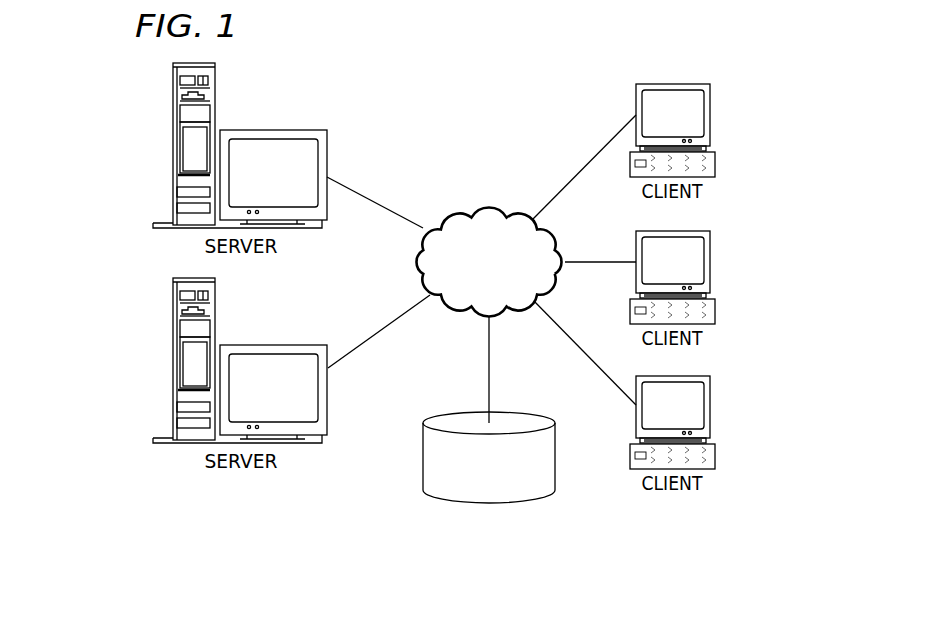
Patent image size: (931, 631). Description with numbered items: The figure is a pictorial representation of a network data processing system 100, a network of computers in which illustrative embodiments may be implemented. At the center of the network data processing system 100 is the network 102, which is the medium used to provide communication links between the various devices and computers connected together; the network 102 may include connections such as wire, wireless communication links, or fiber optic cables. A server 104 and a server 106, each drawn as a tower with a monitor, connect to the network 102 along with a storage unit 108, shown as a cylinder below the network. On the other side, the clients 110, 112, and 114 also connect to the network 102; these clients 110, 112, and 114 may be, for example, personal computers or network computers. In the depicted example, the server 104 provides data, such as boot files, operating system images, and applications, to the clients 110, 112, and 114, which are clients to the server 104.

The network data processing system 100 is at (539, 97).
The network 102 is at (460, 210).
The server 104 is at (173, 147).
The server 106 is at (173, 362).
The storage unit 108 is at (472, 501).
The client 110 is at (710, 115).
The client 112 is at (710, 263).
The client 114 is at (710, 405).